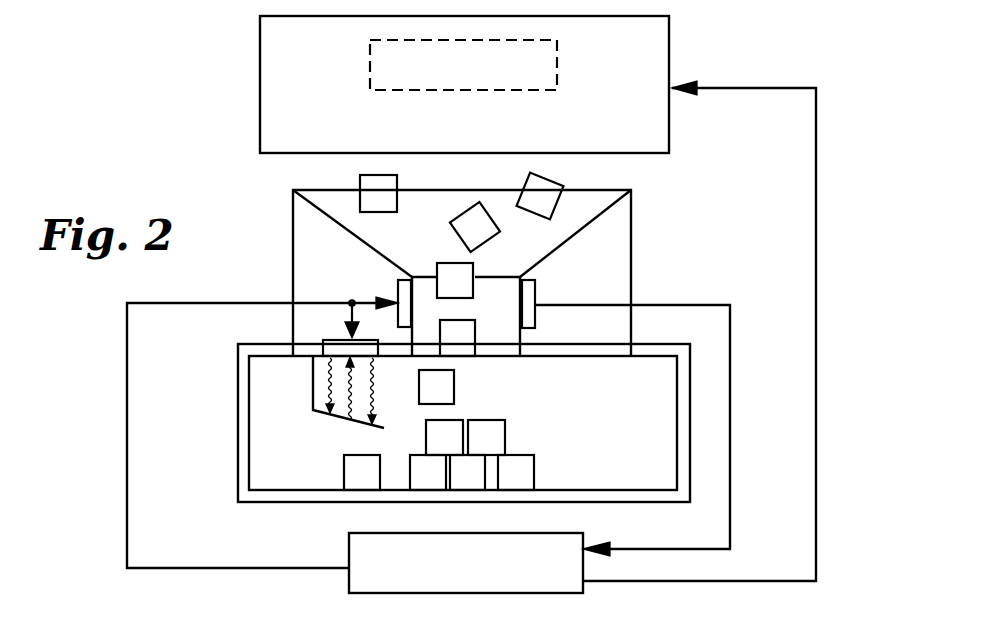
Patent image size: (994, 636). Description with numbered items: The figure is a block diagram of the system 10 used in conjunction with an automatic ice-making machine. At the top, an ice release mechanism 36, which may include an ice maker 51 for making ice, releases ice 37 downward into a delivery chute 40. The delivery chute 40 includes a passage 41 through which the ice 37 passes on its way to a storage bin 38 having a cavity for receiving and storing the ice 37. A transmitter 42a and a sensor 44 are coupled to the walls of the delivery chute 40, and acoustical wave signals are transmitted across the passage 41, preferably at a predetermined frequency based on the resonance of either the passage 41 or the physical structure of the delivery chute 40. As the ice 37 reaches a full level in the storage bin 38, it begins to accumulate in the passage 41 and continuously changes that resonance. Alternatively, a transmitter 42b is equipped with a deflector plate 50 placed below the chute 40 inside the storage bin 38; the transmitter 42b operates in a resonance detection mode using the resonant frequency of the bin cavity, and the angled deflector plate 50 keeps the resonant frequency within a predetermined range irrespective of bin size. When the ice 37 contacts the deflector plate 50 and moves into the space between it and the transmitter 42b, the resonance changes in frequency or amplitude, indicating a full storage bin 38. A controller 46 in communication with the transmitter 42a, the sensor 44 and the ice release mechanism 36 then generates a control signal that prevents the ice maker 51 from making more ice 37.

The system 10 is at (110, 63).
The ice release mechanism 36 is at (260, 92).
The ice maker 51 is at (370, 72).
The ice 37 is at (457, 217).
The delivery chute 40 is at (631, 250).
The passage 41 is at (495, 340).
The transmitter 42a is at (398, 290).
The transmitter 42b is at (340, 340).
The sensor 44 is at (538, 300).
The storage bin 38 is at (238, 430).
The deflector plate 50 is at (335, 415).
The controller 46 is at (349, 553).